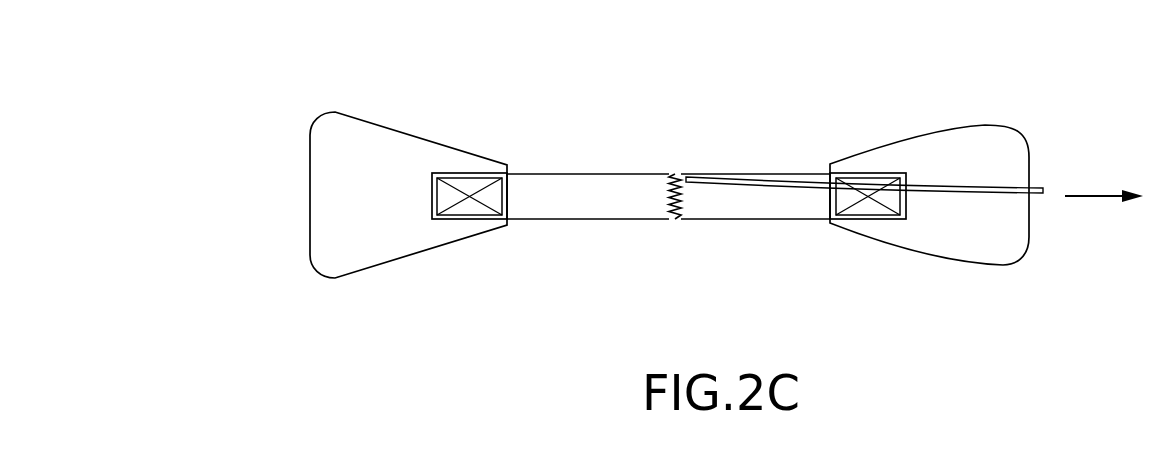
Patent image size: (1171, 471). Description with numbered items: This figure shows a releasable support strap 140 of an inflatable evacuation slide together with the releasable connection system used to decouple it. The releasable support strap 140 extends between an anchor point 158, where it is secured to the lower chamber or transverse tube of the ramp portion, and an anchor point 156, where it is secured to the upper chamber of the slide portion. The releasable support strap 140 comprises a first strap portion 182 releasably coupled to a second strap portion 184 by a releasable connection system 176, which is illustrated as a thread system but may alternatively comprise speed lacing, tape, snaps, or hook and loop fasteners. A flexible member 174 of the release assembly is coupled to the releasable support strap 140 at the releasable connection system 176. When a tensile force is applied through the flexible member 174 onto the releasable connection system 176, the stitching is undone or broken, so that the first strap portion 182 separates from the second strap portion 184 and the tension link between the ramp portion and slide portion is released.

The releasable support strap 140 is at (152, 118).
The anchor point 156 is at (997, 127).
The anchor point 158 is at (391, 128).
The flexible member 174 is at (742, 180).
The releasable connection system 176 is at (670, 175).
The first strap portion 182 is at (772, 212).
The second strap portion 184 is at (555, 210).